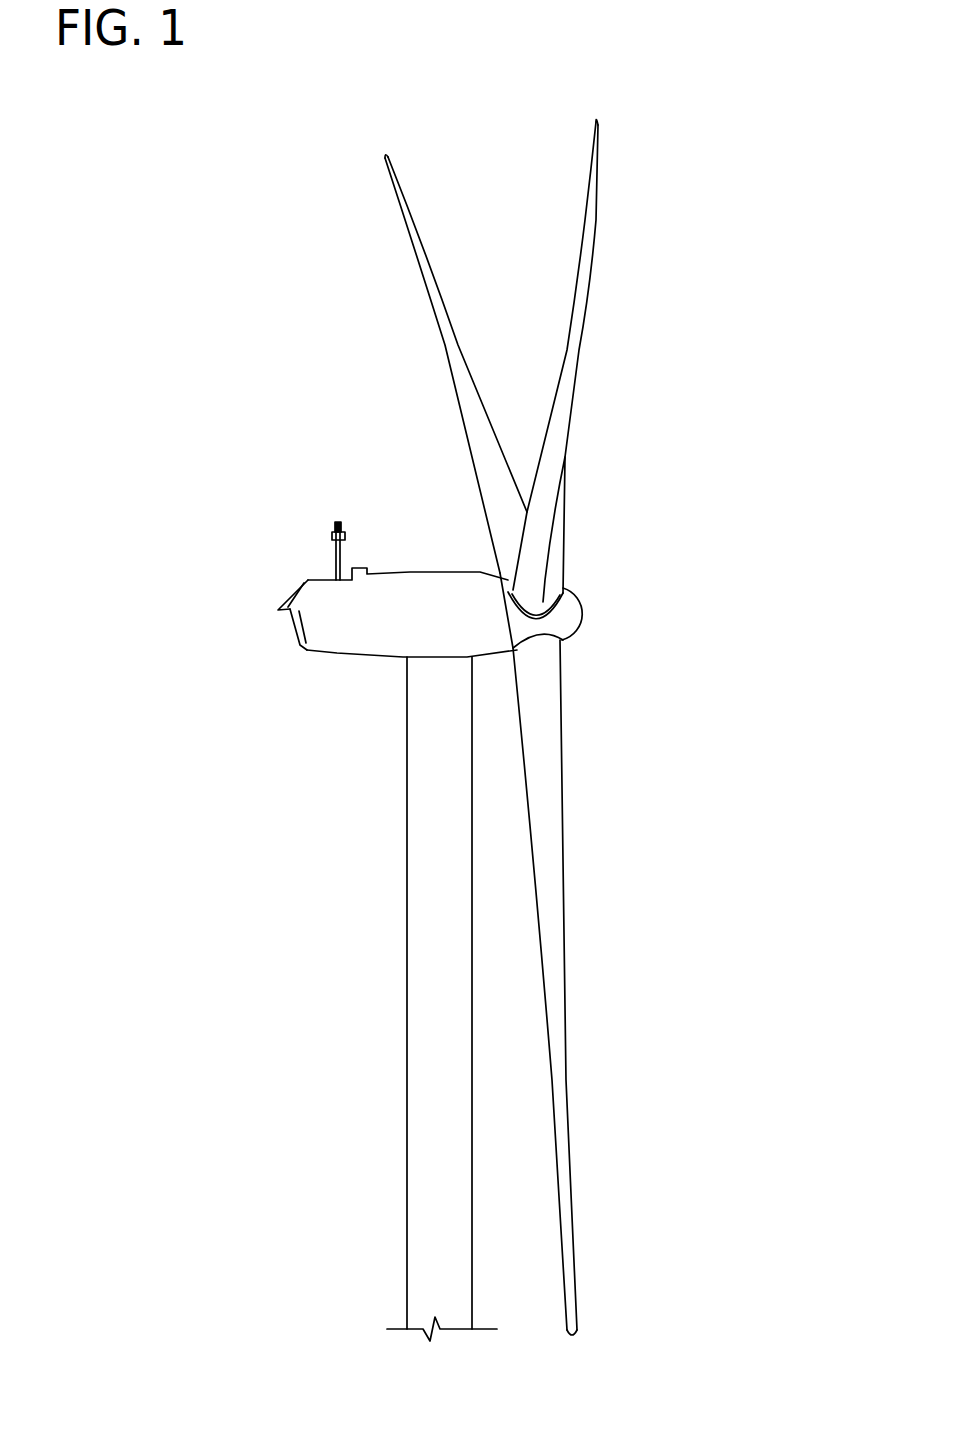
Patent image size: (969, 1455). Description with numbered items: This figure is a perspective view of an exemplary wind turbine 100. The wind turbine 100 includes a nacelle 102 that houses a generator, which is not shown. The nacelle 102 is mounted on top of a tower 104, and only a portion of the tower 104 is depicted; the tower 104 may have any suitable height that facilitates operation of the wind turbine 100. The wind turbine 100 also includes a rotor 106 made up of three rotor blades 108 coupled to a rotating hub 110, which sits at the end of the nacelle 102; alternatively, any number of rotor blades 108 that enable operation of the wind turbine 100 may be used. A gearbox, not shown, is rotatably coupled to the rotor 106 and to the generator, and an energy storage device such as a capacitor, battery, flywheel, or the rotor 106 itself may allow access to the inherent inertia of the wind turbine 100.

The wind turbine 100 is at (254, 192).
The nacelle 102 is at (322, 668).
The tower 104 is at (407, 943).
The rotor 106 is at (664, 331).
The rotor blades 108 is at (423, 245).
The rotating hub 110 is at (583, 623).